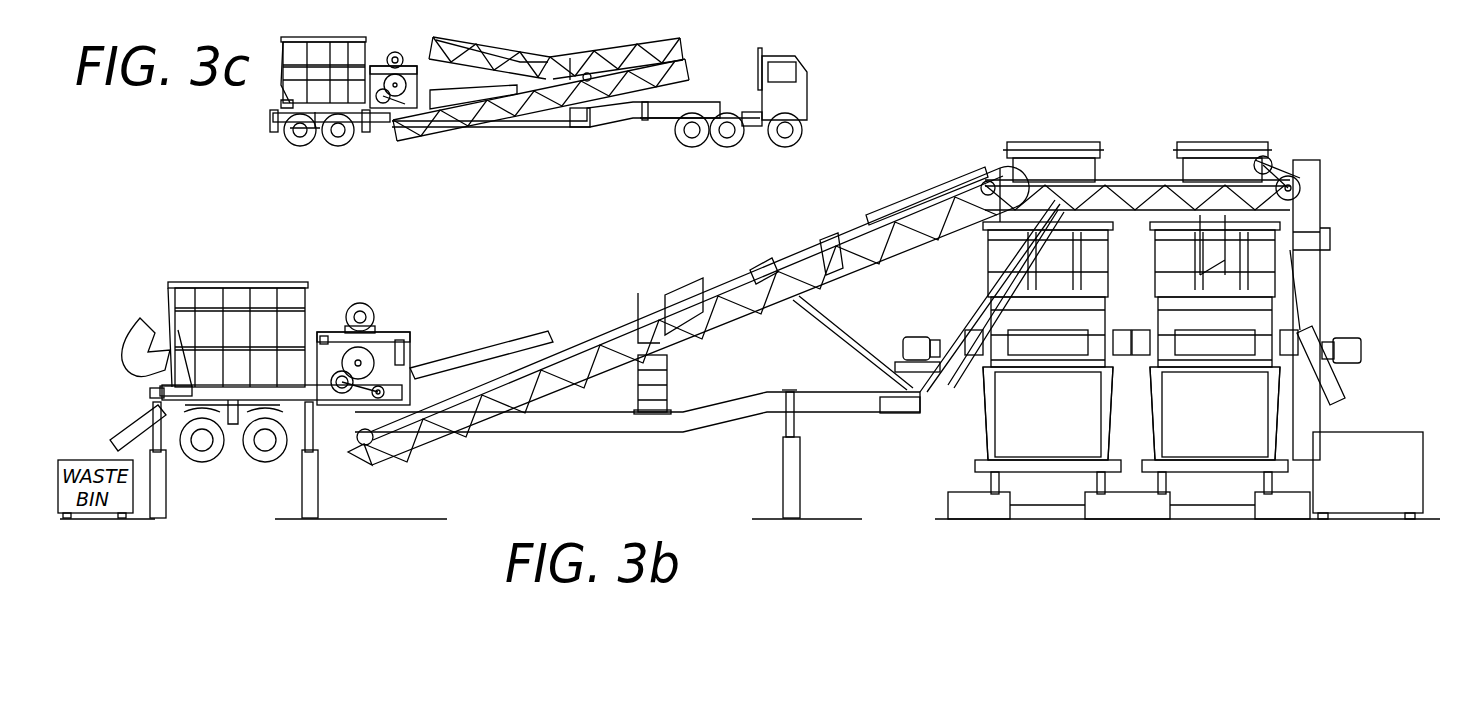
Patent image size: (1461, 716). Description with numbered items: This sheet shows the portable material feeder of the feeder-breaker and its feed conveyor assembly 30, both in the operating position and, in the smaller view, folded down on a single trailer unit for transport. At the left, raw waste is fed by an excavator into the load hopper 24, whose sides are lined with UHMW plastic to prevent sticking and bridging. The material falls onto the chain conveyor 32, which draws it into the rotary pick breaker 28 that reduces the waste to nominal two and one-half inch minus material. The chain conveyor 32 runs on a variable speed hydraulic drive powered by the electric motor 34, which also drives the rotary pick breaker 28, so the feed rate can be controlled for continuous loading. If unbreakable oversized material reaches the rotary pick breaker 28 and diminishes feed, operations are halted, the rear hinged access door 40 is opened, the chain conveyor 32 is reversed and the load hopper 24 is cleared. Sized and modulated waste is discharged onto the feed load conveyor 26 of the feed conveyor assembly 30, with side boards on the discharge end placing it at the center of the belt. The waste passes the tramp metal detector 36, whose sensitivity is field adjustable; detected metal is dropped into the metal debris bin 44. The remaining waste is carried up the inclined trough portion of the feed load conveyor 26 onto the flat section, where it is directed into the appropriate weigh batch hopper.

The load hopper 24 is at (183, 290).
The feed load conveyor 26 is at (612, 332).
The rotary pick breaker 28 is at (335, 395).
The feed conveyor assembly 30 is at (628, 268).
The chain conveyor 32 is at (288, 385).
The electric motor 34 is at (365, 312).
The tramp metal detector 36 is at (763, 252).
The rear hinged access door 40 is at (152, 378).
The metal debris bin 44 is at (1372, 432).